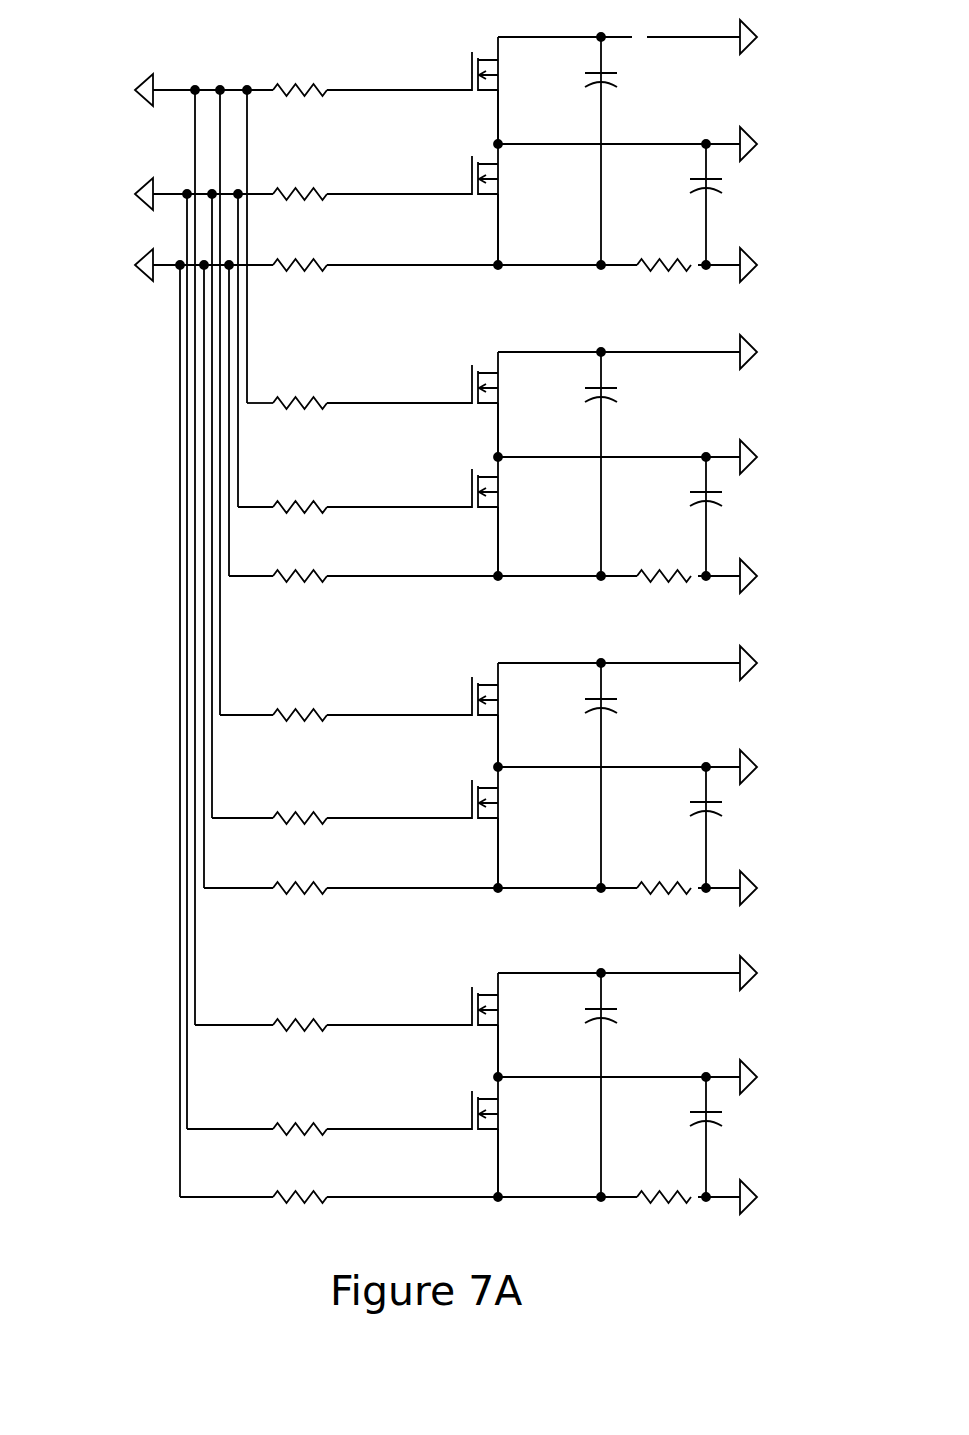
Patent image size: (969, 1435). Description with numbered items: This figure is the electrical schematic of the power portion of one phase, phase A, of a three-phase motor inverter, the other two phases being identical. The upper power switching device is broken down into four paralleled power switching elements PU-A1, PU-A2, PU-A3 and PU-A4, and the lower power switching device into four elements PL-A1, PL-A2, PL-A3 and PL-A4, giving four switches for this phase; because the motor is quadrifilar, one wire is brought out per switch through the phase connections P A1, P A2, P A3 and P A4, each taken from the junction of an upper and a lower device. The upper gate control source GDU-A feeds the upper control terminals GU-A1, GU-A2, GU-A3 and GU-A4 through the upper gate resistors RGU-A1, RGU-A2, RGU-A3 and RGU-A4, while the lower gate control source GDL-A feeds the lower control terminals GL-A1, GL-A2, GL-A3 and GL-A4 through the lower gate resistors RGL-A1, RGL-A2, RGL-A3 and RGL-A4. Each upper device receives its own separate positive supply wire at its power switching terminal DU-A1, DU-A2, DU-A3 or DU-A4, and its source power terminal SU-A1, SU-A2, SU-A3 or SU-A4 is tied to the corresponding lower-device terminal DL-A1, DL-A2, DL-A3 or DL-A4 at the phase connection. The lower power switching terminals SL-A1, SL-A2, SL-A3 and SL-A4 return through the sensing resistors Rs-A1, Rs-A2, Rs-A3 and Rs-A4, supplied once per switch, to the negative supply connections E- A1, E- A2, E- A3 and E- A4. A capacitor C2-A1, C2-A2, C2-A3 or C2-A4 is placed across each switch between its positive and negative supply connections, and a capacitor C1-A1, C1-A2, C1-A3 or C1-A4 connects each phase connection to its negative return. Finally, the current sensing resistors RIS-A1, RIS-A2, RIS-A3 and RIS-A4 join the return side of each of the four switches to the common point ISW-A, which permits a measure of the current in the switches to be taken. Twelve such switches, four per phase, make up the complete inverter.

The upper gate control source GDU-A is at (153, 548).
The lower gate control source GDL-A is at (153, 652).
The current sensing point ISW-A is at (153, 721).
The upper power switching element PU-A1 is at (435, 64).
The lower power switching element PL-A1 is at (435, 174).
The upper gate resistor RGU-A1 is at (299, 102).
The lower gate resistor RGL-A1 is at (297, 208).
The current sensing resistor RIS-A1 is at (302, 278).
The sensing resistor Rs-A1 is at (619, 276).
The capacitor C1-A1 is at (737, 206).
The capacitor C2-A1 is at (632, 153).
The power switching terminal DU-A1 is at (619, 25).
The source power terminal SU-A1 is at (536, 119).
The power switching terminal DL-A1 is at (619, 156).
The power switching terminal SL-A1 is at (534, 231).
The control terminal GU-A1 is at (399, 106).
The control terminal GL-A1 is at (399, 210).
The phase connection P A1 is at (784, 145).
The negative terminal connection E- A1 is at (788, 266).
The upper power switching element PU-A2 is at (435, 377).
The lower power switching element PL-A2 is at (435, 487).
The upper gate resistor RGU-A2 is at (296, 415).
The lower gate resistor RGL-A2 is at (289, 521).
The current sensing resistor RIS-A2 is at (285, 589).
The sensing resistor Rs-A2 is at (619, 587).
The capacitor C1-A2 is at (737, 518).
The capacitor C2-A2 is at (632, 466).
The power switching terminal DU-A2 is at (619, 340).
The source power terminal SU-A2 is at (536, 432).
The power switching terminal DL-A2 is at (619, 469).
The power switching terminal SL-A2 is at (534, 543).
The control terminal GU-A2 is at (399, 419).
The control terminal GL-A2 is at (399, 523).
The phase connection P A2 is at (784, 458).
The negative terminal connection E- A2 is at (788, 577).
The upper power switching element PU-A3 is at (435, 689).
The lower power switching element PL-A3 is at (435, 798).
The upper gate resistor RGU-A3 is at (283, 727).
The lower gate resistor RGL-A3 is at (276, 832).
The current sensing resistor RIS-A3 is at (273, 901).
The sensing resistor Rs-A3 is at (619, 899).
The capacitor C1-A3 is at (737, 829).
The capacitor C2-A3 is at (632, 777).
The power switching terminal DU-A3 is at (619, 651).
The source power terminal SU-A3 is at (536, 743).
The power switching terminal DL-A3 is at (619, 779).
The power switching terminal SL-A3 is at (534, 855).
The control terminal GU-A3 is at (399, 731).
The control terminal GL-A3 is at (399, 834).
The phase connection P A3 is at (784, 768).
The negative terminal connection E- A3 is at (788, 889).
The upper power switching element PU-A4 is at (435, 997).
The lower power switching element PL-A4 is at (435, 1104).
The upper gate resistor RGU-A4 is at (261, 1038).
The lower gate resistor RGL-A4 is at (257, 1142).
The current sensing resistor RIS-A4 is at (253, 1211).
The sensing resistor Rs-A4 is at (619, 1208).
The capacitor C1-A4 is at (737, 1139).
The capacitor C2-A4 is at (640, 1087).
The power switching terminal DU-A4 is at (619, 961).
The source power terminal SU-A4 is at (536, 1053).
The power switching terminal DL-A4 is at (619, 1089).
The power switching terminal SL-A4 is at (534, 1165).
The control terminal GU-A4 is at (399, 1041).
The control terminal GL-A4 is at (399, 1144).
The phase connection P A4 is at (784, 1078).
The negative terminal connection E- A4 is at (788, 1198).